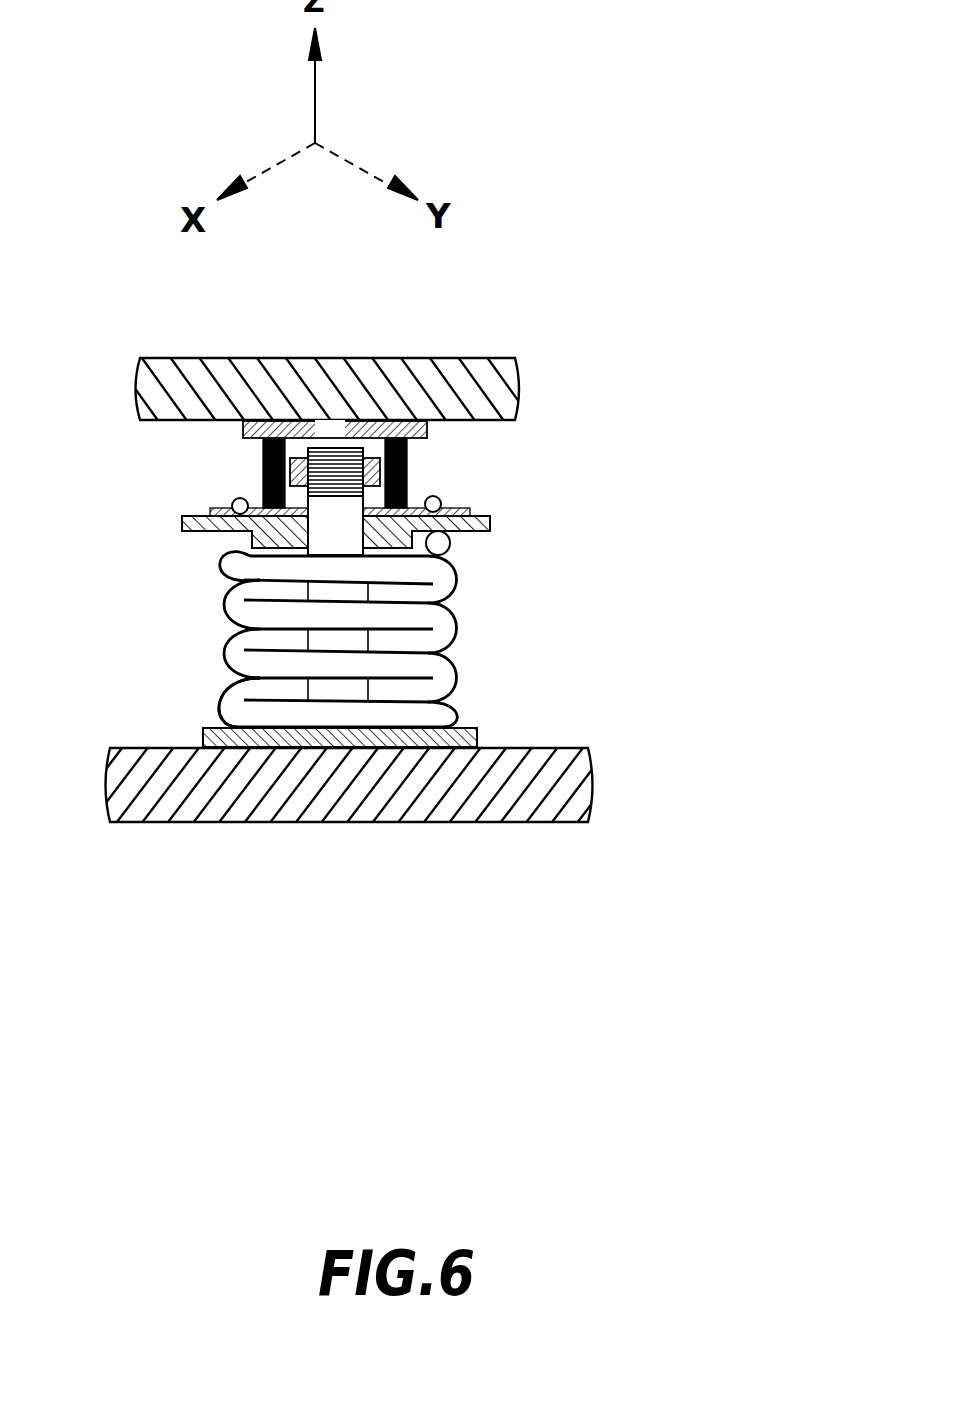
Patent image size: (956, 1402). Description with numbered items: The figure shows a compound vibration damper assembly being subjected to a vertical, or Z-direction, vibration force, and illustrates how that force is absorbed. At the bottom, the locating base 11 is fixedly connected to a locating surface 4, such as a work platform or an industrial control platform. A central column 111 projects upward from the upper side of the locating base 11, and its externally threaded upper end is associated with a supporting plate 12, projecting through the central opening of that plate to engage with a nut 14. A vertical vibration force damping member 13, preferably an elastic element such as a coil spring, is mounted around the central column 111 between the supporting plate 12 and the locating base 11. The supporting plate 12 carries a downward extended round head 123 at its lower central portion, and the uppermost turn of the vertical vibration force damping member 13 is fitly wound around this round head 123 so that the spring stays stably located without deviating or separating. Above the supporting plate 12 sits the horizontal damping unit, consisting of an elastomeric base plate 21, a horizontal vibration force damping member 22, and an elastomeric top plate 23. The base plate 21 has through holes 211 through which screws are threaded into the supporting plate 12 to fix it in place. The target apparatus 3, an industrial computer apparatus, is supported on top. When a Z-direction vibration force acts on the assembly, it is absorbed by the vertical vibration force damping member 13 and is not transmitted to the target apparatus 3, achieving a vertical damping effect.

The target apparatus 3 is at (477, 368).
The locating surface 4 is at (401, 802).
The locating base 11 is at (478, 737).
The central column 111 is at (258, 683).
The supporting plate 12 is at (493, 517).
The round head 123 is at (232, 572).
The vertical vibration force damping member 13 is at (457, 628).
The nut 14 is at (263, 470).
The elastomeric base plate 21 is at (460, 508).
The through holes 211 is at (433, 503).
The horizontal vibration force damping member 22 is at (410, 467).
The elastomeric top plate 23 is at (247, 427).